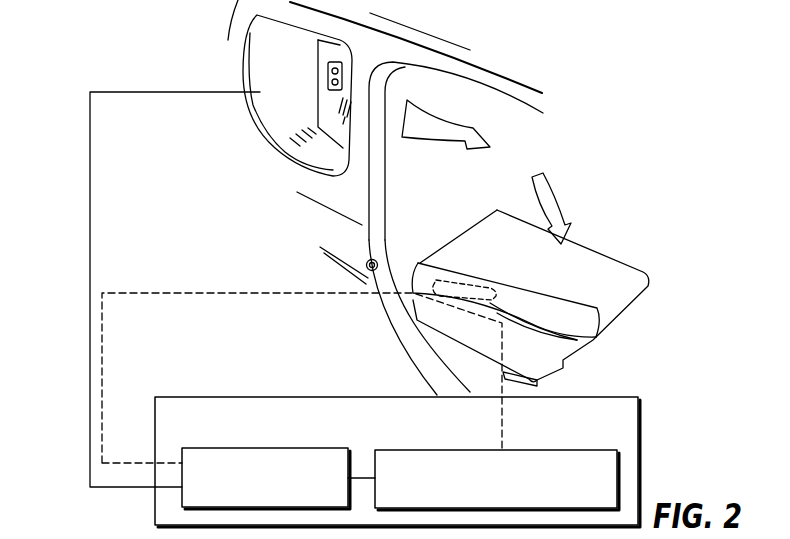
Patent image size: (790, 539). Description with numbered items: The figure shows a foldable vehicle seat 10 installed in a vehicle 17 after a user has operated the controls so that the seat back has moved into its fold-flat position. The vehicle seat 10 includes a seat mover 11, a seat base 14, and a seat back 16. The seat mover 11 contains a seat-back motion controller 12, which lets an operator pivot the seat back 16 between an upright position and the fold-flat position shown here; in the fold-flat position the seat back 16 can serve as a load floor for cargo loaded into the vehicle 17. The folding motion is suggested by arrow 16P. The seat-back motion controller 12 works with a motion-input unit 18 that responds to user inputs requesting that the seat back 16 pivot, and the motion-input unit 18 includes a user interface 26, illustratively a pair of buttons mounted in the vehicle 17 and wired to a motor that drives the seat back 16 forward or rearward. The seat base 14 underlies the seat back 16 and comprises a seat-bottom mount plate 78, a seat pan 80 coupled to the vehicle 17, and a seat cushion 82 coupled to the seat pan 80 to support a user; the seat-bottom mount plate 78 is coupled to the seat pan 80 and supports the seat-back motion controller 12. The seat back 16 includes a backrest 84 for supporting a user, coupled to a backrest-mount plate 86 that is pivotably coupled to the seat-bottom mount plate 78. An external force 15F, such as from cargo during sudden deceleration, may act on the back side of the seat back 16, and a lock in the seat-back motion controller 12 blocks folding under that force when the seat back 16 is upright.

The vehicle seat 10 is at (296, 289).
The seat mover 11 is at (122, 232).
The seat-back motion controller 12 is at (572, 450).
The seat base 14 is at (122, 232).
The external force 15F is at (443, 118).
The seat back 16 is at (122, 232).
The arrow 16P is at (560, 200).
The vehicle 17 is at (507, 69).
The motion-input unit 18 is at (330, 448).
The user interface 26 is at (316, 78).
The seat-bottom mount plate 78 is at (416, 308).
The seat pan 80 is at (484, 367).
The seat cushion 82 is at (449, 334).
The backrest 84 is at (492, 231).
The backrest-mount plate 86 is at (466, 276).